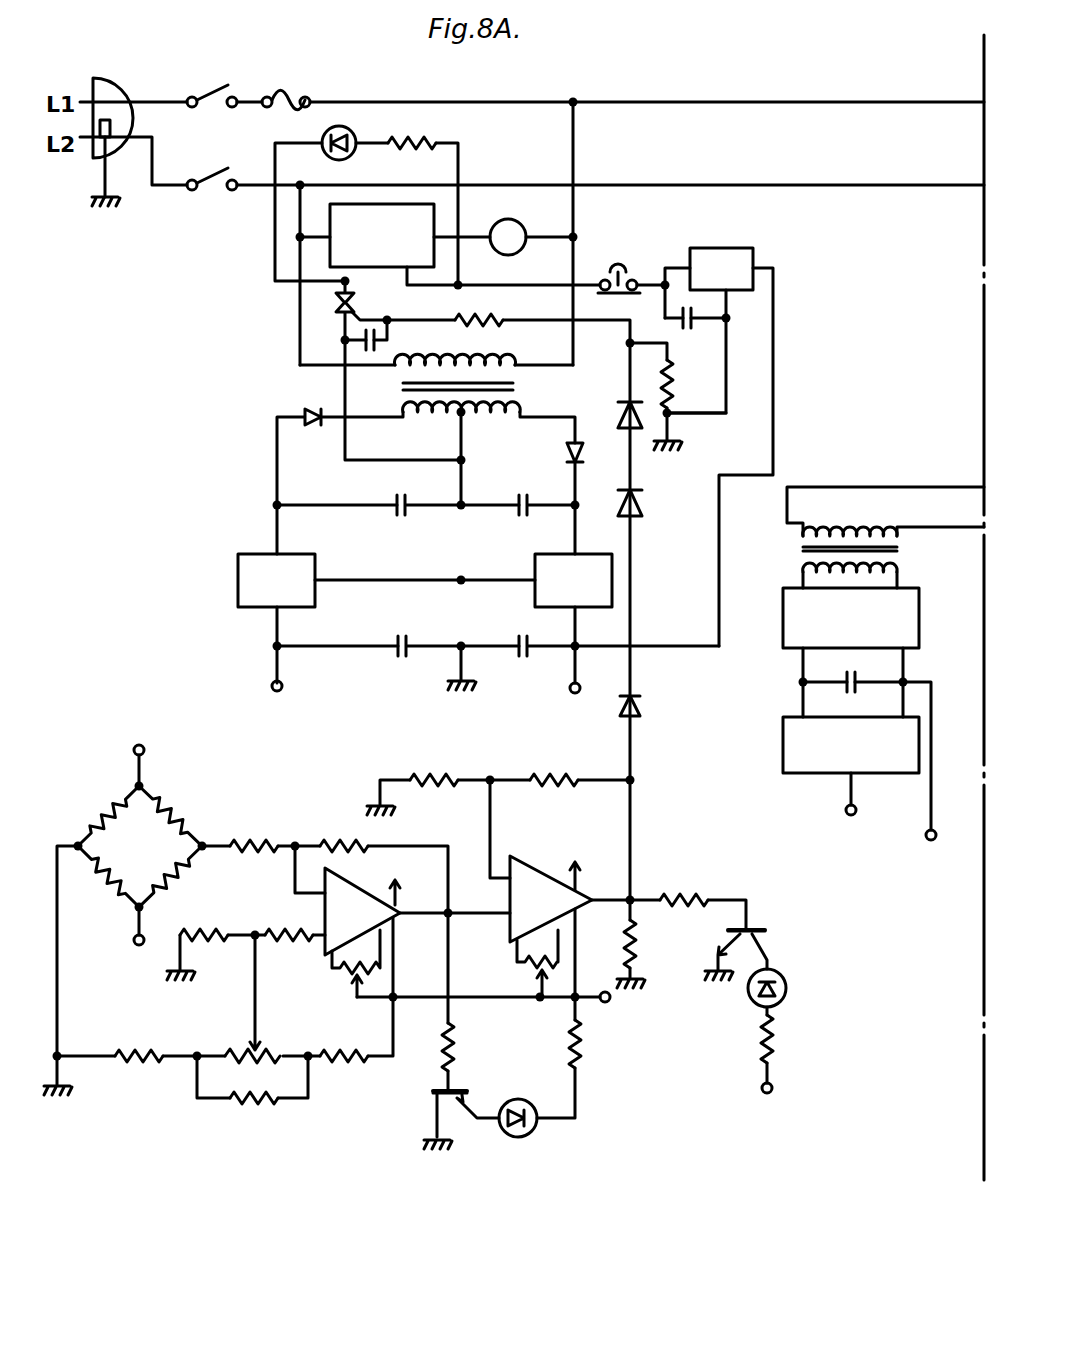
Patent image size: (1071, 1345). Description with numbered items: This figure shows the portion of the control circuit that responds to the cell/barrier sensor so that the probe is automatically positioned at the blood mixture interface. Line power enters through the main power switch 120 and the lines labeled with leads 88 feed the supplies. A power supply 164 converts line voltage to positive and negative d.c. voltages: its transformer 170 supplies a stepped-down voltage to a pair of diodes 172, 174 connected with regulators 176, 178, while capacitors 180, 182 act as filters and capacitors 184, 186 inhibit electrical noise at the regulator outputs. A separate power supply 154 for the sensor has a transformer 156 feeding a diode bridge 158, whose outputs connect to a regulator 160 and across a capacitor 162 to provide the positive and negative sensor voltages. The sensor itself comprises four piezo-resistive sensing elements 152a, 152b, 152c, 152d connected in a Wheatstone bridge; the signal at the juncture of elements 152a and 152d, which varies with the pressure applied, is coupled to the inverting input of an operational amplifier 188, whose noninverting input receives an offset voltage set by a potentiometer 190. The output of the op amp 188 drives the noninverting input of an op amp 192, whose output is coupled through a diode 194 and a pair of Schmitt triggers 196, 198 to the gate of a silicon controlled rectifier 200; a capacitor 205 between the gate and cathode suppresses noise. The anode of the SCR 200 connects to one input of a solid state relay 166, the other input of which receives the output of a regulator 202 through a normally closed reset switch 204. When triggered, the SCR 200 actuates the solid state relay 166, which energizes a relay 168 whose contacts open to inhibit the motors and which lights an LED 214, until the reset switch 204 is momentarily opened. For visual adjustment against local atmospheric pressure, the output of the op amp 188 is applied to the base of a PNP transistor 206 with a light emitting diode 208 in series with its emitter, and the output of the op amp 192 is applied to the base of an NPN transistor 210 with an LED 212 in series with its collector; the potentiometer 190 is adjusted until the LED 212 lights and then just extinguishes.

The main power switch 120 is at (230, 144).
The LED 214 is at (352, 130).
The solid state relay 166 is at (402, 253).
The relay 168 is at (490, 232).
The reset switch 204 is at (618, 268).
The regulator 202 is at (718, 258).
The silicon controlled rectifier 200 is at (331, 306).
The capacitor 205 is at (380, 347).
The power supply 164 is at (239, 520).
The transformer 170 is at (522, 388).
The diode 172 is at (298, 404).
The diode 174 is at (566, 458).
The regulator 176 is at (295, 600).
The regulator 178 is at (593, 600).
The capacitor 180 is at (392, 520).
The capacitor 182 is at (498, 520).
The capacitor 184 is at (395, 662).
The capacitor 186 is at (516, 662).
The Schmitt trigger 198 is at (612, 402).
The Schmitt trigger 196 is at (632, 512).
The diode 194 is at (640, 702).
The power supply 154 is at (773, 701).
The transformer 156 is at (903, 556).
The diode bridge 158 is at (872, 631).
The capacitor 162 is at (836, 692).
The regulator 160 is at (898, 767).
The load cell bridge leads 88 is at (160, 902).
The piezo-resistive sensing element 152a is at (164, 810).
The piezo-resistive sensing element 152b is at (110, 818).
The piezo-resistive sensing element 152c is at (108, 900).
The piezo-resistive sensing element 152d is at (186, 876).
The operational amplifier 188 is at (320, 912).
The potentiometer 190 is at (270, 1054).
The op amp 192 is at (542, 882).
The PNP transistor 206 is at (456, 1092).
The light emitting diode 208 is at (516, 1138).
The NPN transistor 210 is at (760, 928).
The LED 212 is at (786, 988).